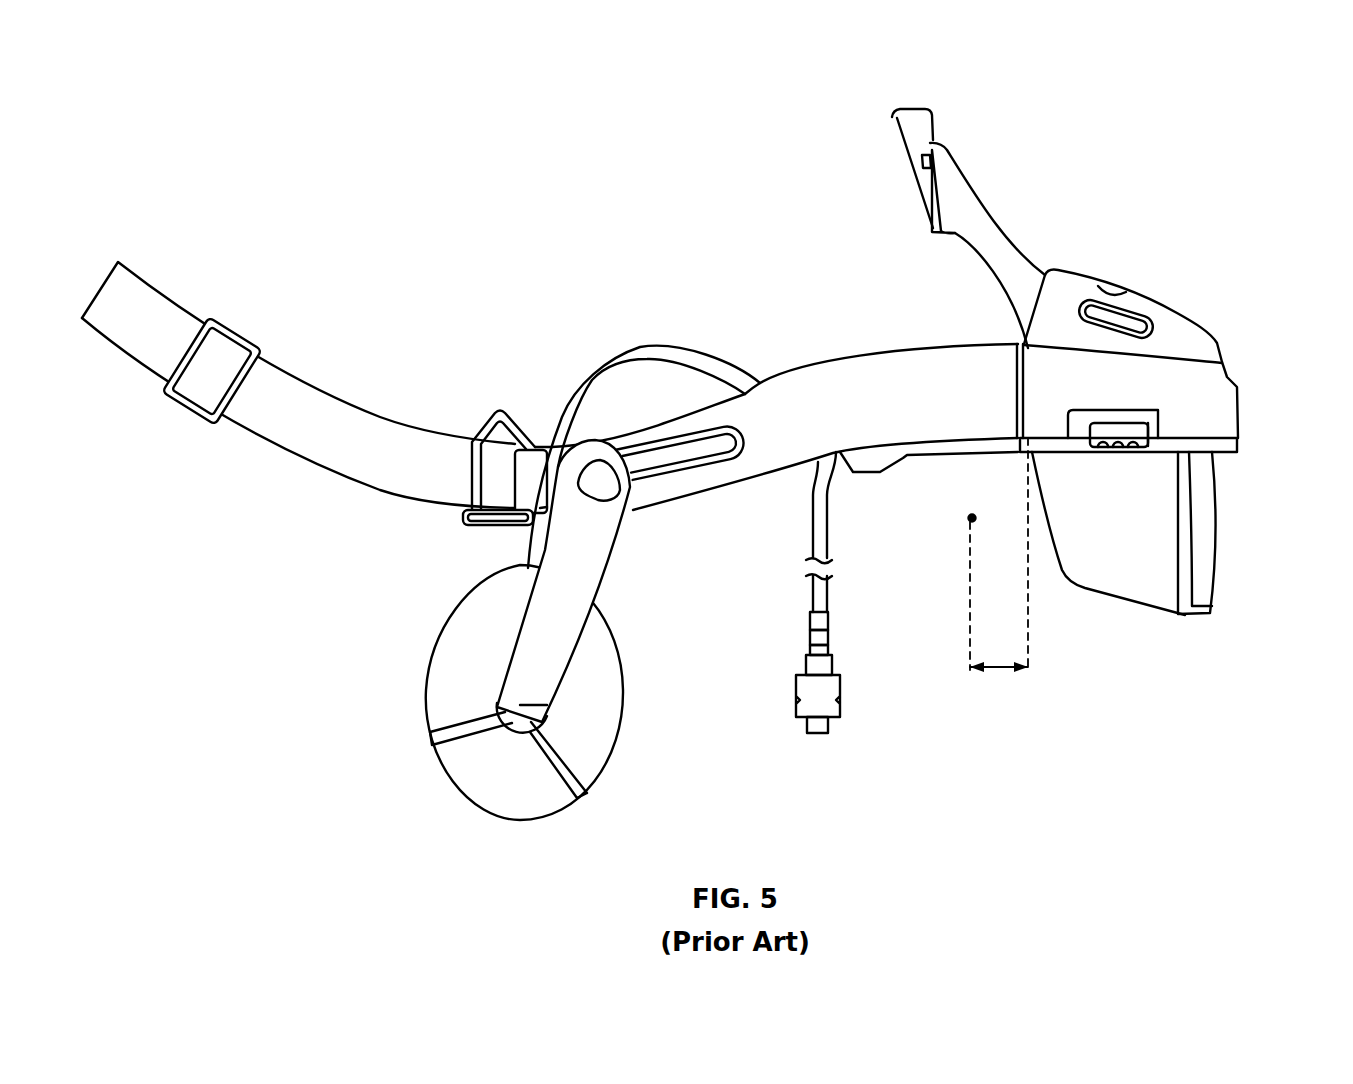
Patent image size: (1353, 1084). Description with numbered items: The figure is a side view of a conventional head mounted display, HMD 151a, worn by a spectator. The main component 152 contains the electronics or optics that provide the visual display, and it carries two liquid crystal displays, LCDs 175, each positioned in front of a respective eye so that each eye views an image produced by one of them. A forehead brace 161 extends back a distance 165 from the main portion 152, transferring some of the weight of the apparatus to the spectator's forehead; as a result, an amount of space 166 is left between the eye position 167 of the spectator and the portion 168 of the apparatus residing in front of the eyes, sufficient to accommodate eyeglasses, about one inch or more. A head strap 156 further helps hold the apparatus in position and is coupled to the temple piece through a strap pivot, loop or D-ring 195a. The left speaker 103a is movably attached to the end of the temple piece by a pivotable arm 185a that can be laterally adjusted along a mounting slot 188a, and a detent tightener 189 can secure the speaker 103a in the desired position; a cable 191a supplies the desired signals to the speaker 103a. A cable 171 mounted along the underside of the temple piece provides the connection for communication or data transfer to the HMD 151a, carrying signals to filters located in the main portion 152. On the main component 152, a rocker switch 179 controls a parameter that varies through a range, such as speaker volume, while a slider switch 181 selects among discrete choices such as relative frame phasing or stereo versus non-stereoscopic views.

The head mounted display 151a is at (778, 215).
The head strap 156 is at (290, 393).
The left strap D-ring 195a is at (488, 413).
The cable 191a is at (663, 348).
The detent tightener 189 is at (607, 470).
The mounting slot 188a is at (717, 459).
The pivotable arm 185a is at (597, 566).
The left speaker 103a is at (437, 685).
The cable 171 is at (808, 549).
The forehead brace 161 is at (918, 123).
The distance 165 is at (1018, 180).
The main component 152 is at (1160, 233).
The rocker switch 179 is at (1132, 314).
The slider switch 181 is at (1160, 437).
The liquid crystal display 175 is at (1207, 513).
The eye position 167 is at (970, 520).
The portion of the apparatus in front of the eyes 168 is at (1045, 511).
The space 166 is at (997, 668).